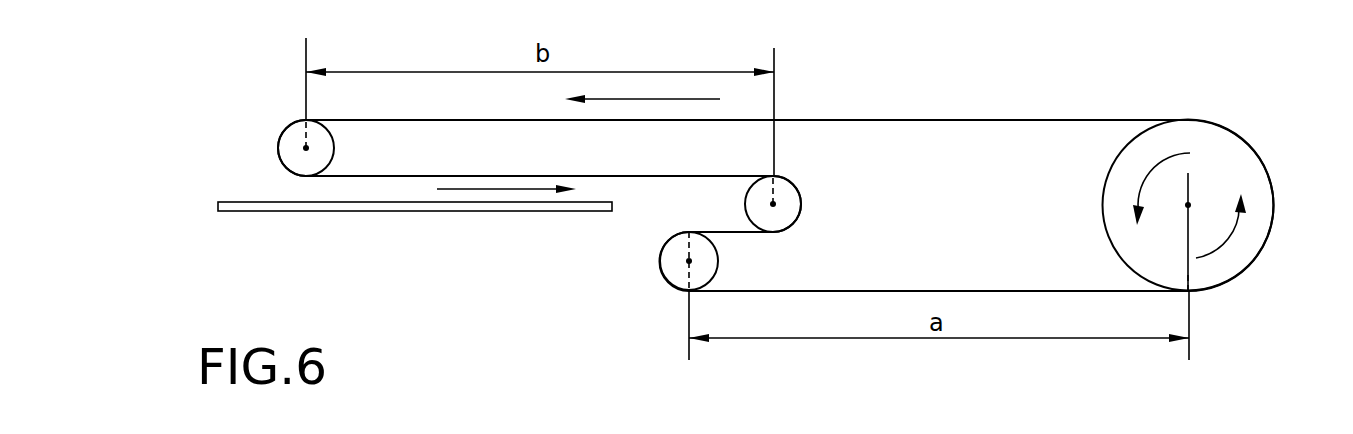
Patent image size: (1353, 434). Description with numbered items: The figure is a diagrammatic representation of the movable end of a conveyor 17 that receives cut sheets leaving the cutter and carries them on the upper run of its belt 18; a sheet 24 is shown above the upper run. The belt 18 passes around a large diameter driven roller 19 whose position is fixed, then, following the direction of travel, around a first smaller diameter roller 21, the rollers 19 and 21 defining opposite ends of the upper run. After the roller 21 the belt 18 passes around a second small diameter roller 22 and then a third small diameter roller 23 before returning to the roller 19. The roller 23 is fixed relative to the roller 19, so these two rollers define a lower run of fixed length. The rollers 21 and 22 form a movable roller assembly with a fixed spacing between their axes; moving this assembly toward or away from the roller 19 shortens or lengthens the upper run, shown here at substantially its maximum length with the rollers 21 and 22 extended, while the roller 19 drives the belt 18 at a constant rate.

The conveyor 17 is at (960, 110).
The belt 18 is at (1055, 119).
The driven roller 19 is at (1215, 172).
The first smaller diameter roller 21 is at (292, 146).
The second small diameter roller 22 is at (786, 197).
The third small diameter roller 23 is at (672, 261).
The sheet 24 is at (335, 211).